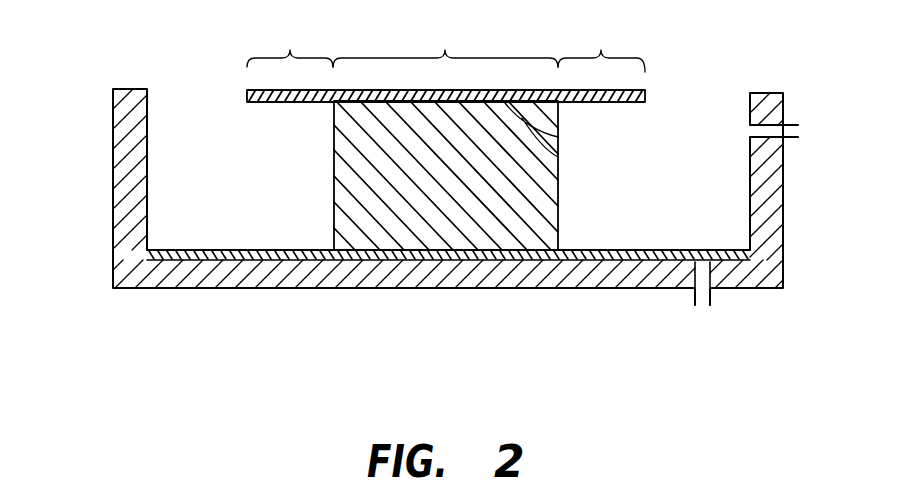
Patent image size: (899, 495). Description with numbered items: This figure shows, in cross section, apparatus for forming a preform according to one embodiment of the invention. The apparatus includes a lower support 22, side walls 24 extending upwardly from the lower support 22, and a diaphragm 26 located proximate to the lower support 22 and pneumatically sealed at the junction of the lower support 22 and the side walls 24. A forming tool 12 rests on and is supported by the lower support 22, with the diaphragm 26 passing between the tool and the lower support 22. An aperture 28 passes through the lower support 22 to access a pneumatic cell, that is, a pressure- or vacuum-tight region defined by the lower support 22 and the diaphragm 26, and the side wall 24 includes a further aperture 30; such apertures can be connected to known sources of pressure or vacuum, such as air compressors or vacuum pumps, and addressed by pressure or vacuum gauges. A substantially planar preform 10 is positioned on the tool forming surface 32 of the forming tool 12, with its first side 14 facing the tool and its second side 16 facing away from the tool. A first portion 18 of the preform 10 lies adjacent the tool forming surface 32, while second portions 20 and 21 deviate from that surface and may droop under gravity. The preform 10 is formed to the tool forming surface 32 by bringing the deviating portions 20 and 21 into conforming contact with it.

The preform 10 is at (646, 98).
The forming tool 12 is at (552, 210).
The first side 14 is at (297, 103).
The second side 16 is at (262, 90).
The first portion 18 is at (445, 43).
The second portion 20 is at (290, 43).
The second portion 21 is at (601, 46).
The lower support 22 is at (265, 278).
The side walls 24 is at (113, 237).
The diaphragm 26 is at (214, 251).
The aperture 28 is at (702, 305).
The aperture 30 is at (798, 131).
The tool forming surface 32 is at (558, 157).